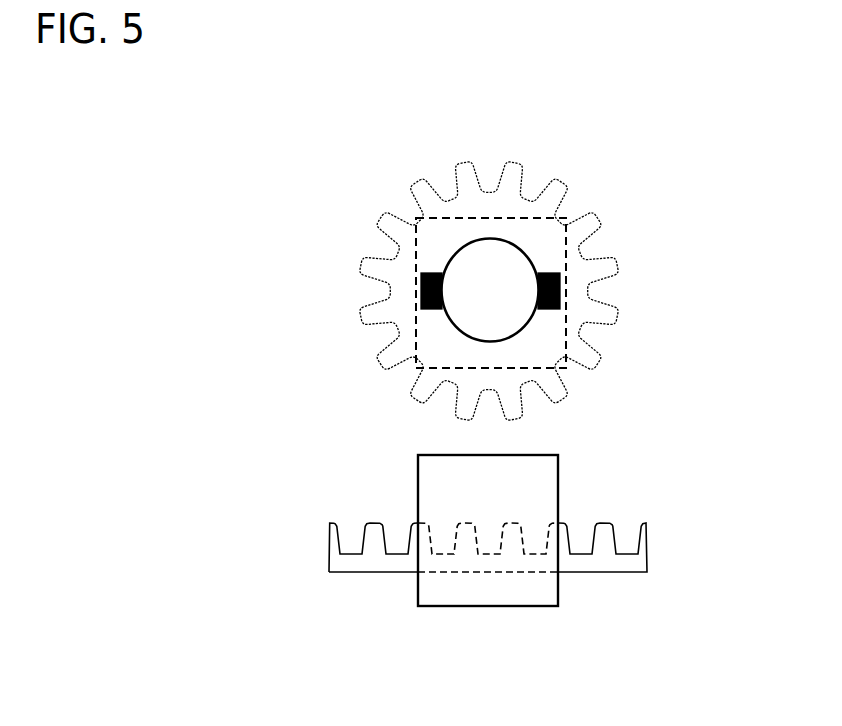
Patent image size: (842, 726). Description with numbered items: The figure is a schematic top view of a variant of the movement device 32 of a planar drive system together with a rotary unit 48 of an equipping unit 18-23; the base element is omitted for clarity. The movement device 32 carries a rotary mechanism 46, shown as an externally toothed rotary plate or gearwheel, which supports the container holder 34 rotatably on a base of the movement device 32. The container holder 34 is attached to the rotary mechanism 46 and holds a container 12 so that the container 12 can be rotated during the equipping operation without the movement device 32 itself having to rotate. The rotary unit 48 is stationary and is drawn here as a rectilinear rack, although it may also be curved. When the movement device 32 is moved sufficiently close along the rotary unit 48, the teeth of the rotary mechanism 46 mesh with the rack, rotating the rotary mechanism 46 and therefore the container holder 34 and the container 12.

The rotary mechanism 46 is at (523, 173).
The container 12 is at (527, 253).
The movement device 32 is at (567, 320).
The container holder 34 is at (423, 308).
The rotary unit 48 is at (647, 542).
The equipping unit 18-23 is at (557, 587).